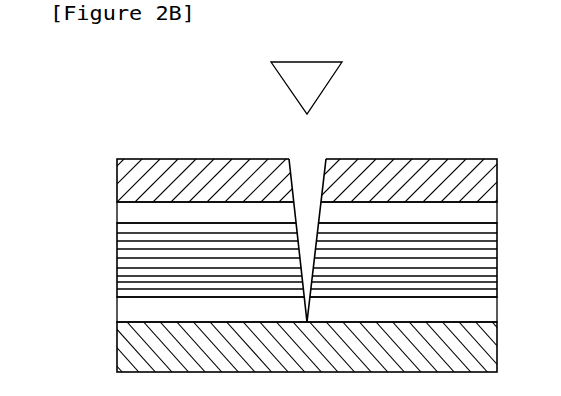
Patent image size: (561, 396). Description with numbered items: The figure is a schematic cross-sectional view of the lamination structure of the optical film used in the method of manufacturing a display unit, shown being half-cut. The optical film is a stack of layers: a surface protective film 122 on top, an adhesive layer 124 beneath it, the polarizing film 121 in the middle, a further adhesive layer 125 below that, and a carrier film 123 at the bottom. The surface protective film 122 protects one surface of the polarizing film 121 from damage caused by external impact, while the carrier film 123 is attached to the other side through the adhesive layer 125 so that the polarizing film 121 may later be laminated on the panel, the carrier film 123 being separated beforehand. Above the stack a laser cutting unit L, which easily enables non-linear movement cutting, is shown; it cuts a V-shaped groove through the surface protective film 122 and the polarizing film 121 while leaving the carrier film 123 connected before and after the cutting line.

The laser cutting unit L is at (271, 62).
The surface protective film 122 is at (128, 176).
The adhesive layer 124 is at (128, 212).
The polarizing film 121 is at (128, 254).
The adhesive layer 125 is at (128, 309).
The carrier film 123 is at (128, 342).